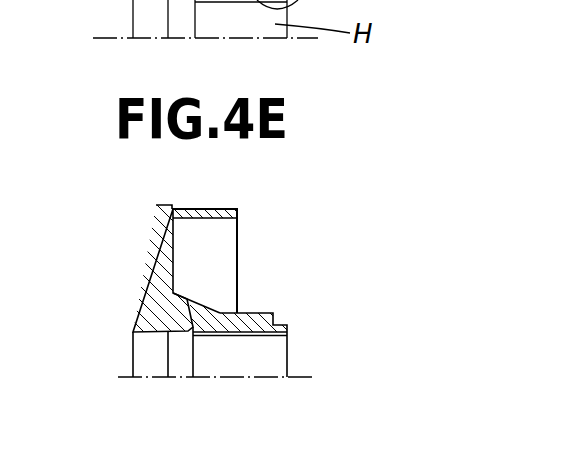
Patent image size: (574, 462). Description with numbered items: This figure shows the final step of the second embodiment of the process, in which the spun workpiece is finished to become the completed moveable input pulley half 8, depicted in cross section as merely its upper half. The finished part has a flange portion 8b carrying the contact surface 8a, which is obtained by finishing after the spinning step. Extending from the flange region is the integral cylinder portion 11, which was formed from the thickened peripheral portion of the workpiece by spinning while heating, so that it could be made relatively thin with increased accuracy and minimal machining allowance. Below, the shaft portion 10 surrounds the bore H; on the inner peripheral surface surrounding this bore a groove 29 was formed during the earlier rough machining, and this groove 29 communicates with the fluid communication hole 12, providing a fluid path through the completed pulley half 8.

The moveable input pulley half 8 is at (127, 250).
The contact surface 8a is at (133, 326).
The flange portion 8b is at (148, 250).
The shaft portion 10 is at (258, 314).
The integral cylinder portion 11 is at (200, 210).
The fluid communication hole 12 is at (198, 314).
The groove 29 is at (255, 337).
The bore H is at (278, 365).